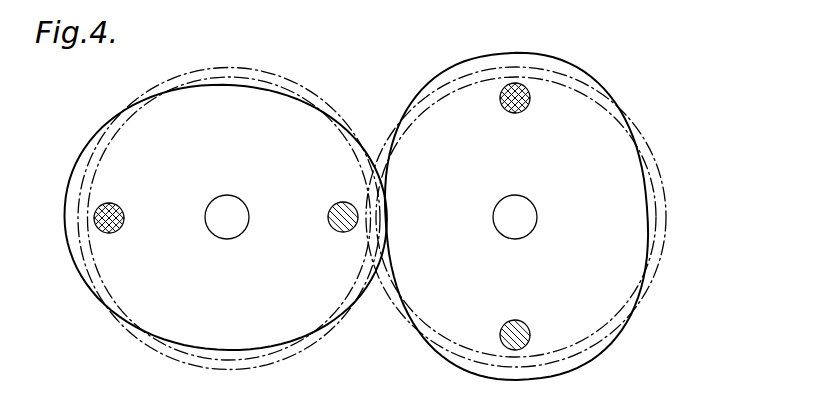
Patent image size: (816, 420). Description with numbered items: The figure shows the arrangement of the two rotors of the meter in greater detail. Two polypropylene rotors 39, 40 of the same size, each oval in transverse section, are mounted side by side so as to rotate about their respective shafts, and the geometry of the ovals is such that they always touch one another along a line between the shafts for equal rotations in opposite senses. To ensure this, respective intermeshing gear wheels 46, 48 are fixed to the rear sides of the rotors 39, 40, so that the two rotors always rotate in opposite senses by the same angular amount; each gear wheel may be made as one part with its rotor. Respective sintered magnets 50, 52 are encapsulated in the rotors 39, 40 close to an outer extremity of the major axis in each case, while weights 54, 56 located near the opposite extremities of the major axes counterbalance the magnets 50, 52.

The rotor 39 is at (124, 320).
The rotor 40 is at (603, 302).
The gear wheel 46 is at (280, 73).
The gear wheel 48 is at (657, 177).
The sintered magnet 50 is at (100, 203).
The sintered magnet 52 is at (529, 90).
The weight 54 is at (343, 201).
The weight 56 is at (500, 345).